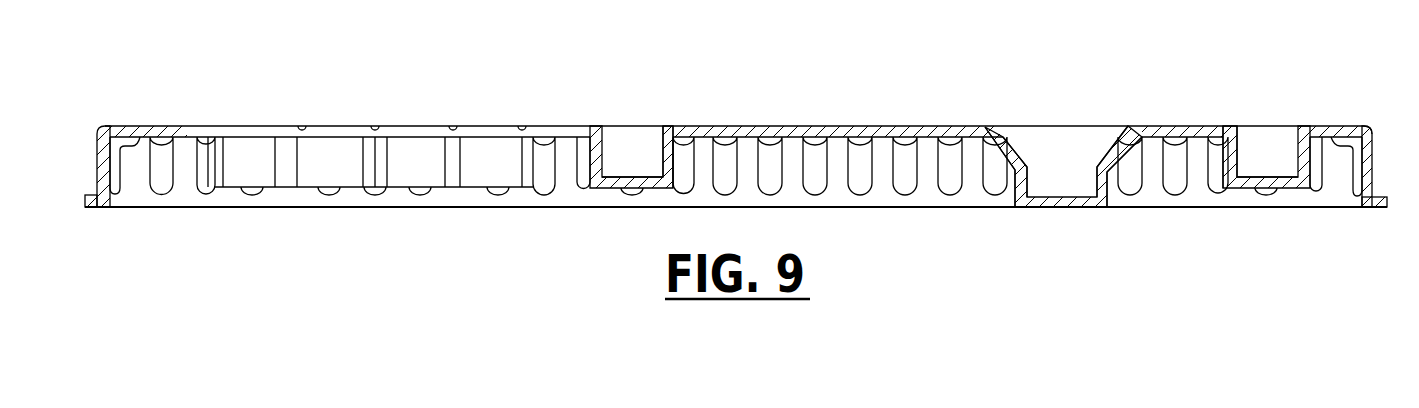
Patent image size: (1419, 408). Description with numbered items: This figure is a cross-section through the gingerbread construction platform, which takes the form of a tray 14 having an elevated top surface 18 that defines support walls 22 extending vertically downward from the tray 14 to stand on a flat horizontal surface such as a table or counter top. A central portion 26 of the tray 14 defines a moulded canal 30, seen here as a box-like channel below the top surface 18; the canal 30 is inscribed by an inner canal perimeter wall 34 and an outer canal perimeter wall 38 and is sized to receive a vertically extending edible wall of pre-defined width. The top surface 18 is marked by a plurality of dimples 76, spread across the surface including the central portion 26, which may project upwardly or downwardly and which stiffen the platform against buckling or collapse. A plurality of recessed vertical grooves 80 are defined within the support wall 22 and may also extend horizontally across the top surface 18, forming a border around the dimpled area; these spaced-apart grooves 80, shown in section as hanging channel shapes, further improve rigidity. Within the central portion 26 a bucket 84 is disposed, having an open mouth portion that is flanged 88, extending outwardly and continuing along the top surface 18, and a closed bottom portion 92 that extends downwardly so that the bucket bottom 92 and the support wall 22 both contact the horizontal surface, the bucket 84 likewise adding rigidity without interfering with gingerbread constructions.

The tray 14 is at (84, 200).
The top surface 18 is at (303, 127).
The support wall 22 is at (100, 165).
The central portion 26 is at (780, 140).
The canal 30 is at (633, 177).
The inner canal perimeter wall 34 is at (662, 152).
The outer canal perimeter wall 38 is at (610, 150).
The dimples 76 is at (920, 137).
The recessed vertical grooves 80 is at (723, 160).
The bucket 84 is at (1060, 140).
The flanged mouth portion 88 is at (1020, 153).
The closed bottom portion 92 is at (1088, 170).